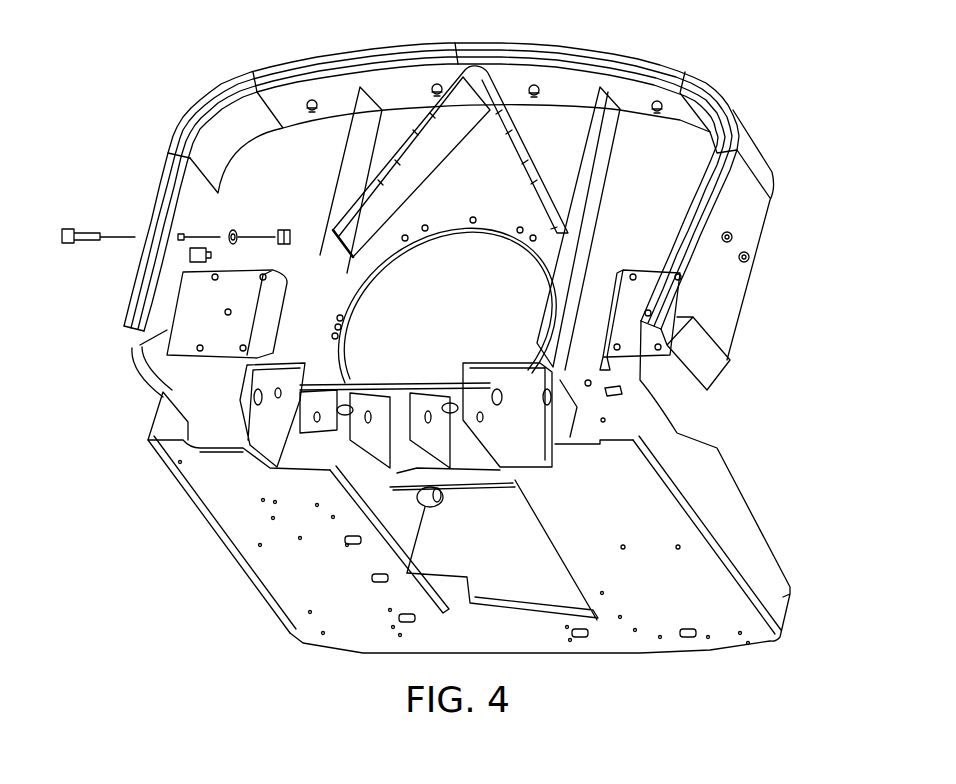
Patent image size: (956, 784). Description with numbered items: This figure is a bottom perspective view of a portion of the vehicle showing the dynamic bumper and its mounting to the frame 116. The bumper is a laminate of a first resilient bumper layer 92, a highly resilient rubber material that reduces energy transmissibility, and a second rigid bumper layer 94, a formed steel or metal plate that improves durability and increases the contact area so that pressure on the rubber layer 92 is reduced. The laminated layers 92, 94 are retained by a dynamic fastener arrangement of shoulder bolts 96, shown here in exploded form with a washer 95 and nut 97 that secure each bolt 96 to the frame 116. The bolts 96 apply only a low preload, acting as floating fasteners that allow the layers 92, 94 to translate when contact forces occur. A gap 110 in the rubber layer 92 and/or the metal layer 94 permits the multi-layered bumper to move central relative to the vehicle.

The gap 110 is at (456, 44).
The first resilient bumper layer 92 is at (692, 85).
The second rigid bumper layer 94 is at (757, 148).
The frame 116 is at (193, 190).
The shoulder bolt 96 is at (88, 231).
The washer 95 is at (236, 232).
The nut 97 is at (283, 232).